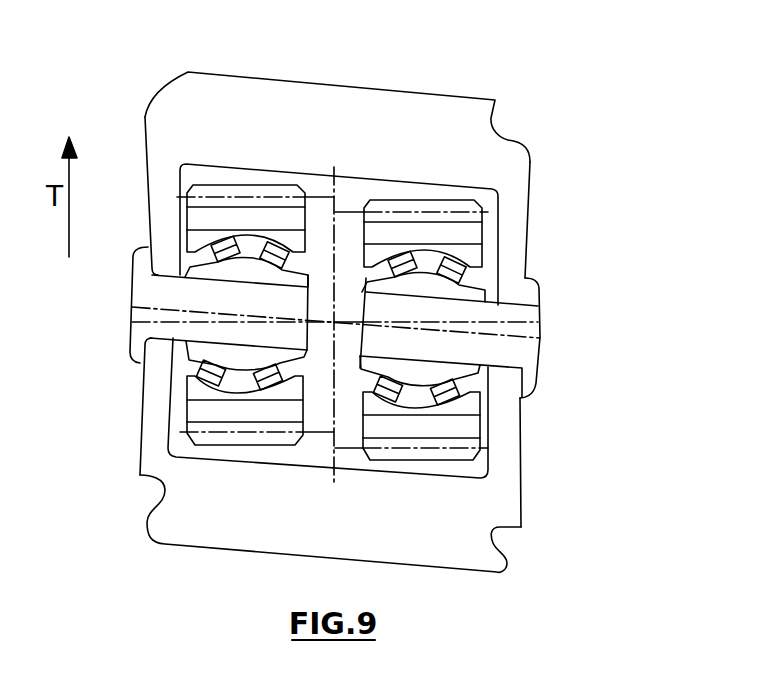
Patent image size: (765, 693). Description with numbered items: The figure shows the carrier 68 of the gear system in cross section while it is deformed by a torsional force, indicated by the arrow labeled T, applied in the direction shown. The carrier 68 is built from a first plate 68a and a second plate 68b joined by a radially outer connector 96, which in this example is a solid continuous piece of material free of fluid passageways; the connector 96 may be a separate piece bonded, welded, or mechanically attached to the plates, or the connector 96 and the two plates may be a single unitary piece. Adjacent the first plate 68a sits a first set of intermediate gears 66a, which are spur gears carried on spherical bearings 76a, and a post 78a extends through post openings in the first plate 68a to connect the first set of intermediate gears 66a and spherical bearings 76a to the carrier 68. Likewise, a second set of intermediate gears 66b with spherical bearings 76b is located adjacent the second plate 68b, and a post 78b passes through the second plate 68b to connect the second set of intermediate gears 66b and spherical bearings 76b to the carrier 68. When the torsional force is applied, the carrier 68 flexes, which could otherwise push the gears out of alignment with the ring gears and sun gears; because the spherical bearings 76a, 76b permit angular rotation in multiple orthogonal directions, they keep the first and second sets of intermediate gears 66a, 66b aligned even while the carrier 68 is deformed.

The carrier 68 is at (557, 115).
The first plate 68a is at (145, 448).
The second plate 68b is at (518, 438).
The radially outer connector 96 is at (337, 103).
The first set of intermediate gears 66a is at (207, 220).
The second set of intermediate gears 66b is at (472, 235).
The spherical bearings 76a is at (197, 390).
The spherical bearings 76b is at (472, 403).
The post 78a is at (130, 311).
The post 78b is at (540, 337).